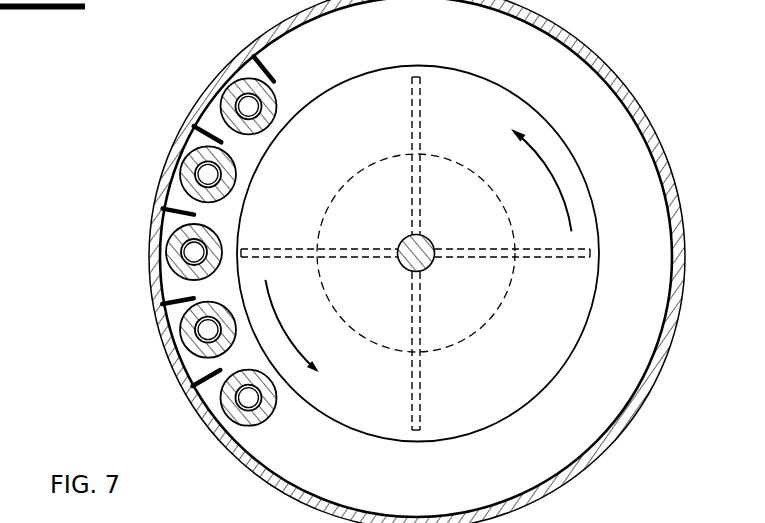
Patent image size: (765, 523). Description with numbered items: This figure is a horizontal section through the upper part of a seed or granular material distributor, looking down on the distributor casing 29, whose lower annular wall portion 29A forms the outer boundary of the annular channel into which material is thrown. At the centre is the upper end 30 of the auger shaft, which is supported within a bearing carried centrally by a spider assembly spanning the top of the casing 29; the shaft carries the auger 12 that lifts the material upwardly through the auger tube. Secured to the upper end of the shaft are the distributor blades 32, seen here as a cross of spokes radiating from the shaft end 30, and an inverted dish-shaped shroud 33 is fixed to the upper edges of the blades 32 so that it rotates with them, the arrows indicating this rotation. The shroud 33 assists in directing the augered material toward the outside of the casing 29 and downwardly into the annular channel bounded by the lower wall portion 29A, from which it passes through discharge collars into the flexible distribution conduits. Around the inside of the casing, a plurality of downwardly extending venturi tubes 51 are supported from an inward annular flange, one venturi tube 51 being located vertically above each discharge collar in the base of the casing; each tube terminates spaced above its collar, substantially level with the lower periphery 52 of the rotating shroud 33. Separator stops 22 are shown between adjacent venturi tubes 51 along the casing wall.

The auger 12 is at (365, 190).
The housing wall 22 is at (207, 114).
The casing 29 is at (553, 18).
The lower annular wall portion 29A is at (580, 40).
The upper end of the auger shaft 30 is at (416, 253).
The distributor blades 32 is at (413, 97).
The inverted dish-shaped shroud 33 is at (578, 165).
The venturi tubes 51 is at (269, 102).
The lower periphery of the rotating shroud 52 is at (224, 216).